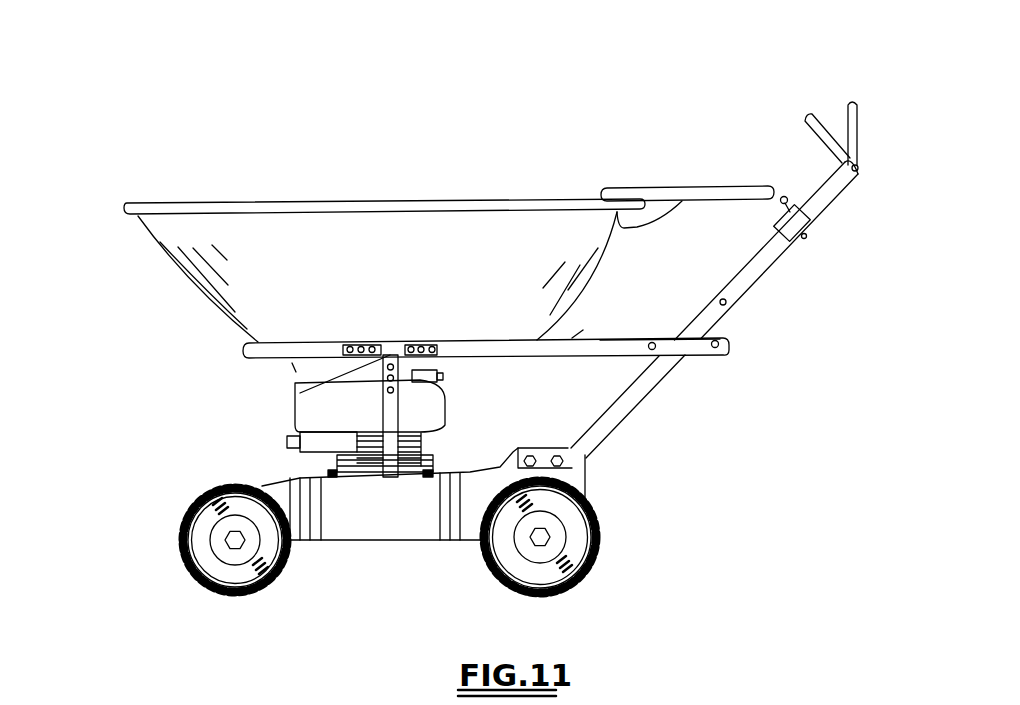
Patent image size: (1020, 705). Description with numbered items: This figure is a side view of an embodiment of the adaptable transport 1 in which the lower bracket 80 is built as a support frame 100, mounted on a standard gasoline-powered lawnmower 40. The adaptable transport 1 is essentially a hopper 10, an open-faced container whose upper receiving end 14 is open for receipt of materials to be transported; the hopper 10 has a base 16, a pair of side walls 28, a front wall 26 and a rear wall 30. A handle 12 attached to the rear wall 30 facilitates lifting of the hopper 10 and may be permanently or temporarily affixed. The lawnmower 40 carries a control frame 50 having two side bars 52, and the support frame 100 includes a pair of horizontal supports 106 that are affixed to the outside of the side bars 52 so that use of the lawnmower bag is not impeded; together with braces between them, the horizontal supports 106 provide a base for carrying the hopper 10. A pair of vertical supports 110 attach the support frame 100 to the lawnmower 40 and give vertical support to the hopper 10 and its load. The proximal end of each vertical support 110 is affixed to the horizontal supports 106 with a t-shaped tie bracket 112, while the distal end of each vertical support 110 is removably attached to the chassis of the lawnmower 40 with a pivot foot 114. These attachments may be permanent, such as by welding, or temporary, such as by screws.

The adaptable transport 1 is at (423, 143).
The hopper 10 is at (455, 265).
The handle 12 is at (688, 182).
The upper receiving end 14 is at (320, 197).
The base 16 is at (297, 360).
The front wall 26 is at (177, 277).
The side wall 28 is at (386, 295).
The rear wall 30 is at (597, 282).
The lawnmower 40 is at (640, 505).
The control frame 50 is at (633, 423).
The side bar 52 is at (770, 268).
The lower bracket 80 is at (397, 493).
The support frame 100 is at (603, 352).
The horizontal support 106 is at (601, 319).
The vertical support 110 is at (397, 417).
The t-shaped tie bracket 112 is at (300, 393).
The pivot foot 114 is at (390, 470).